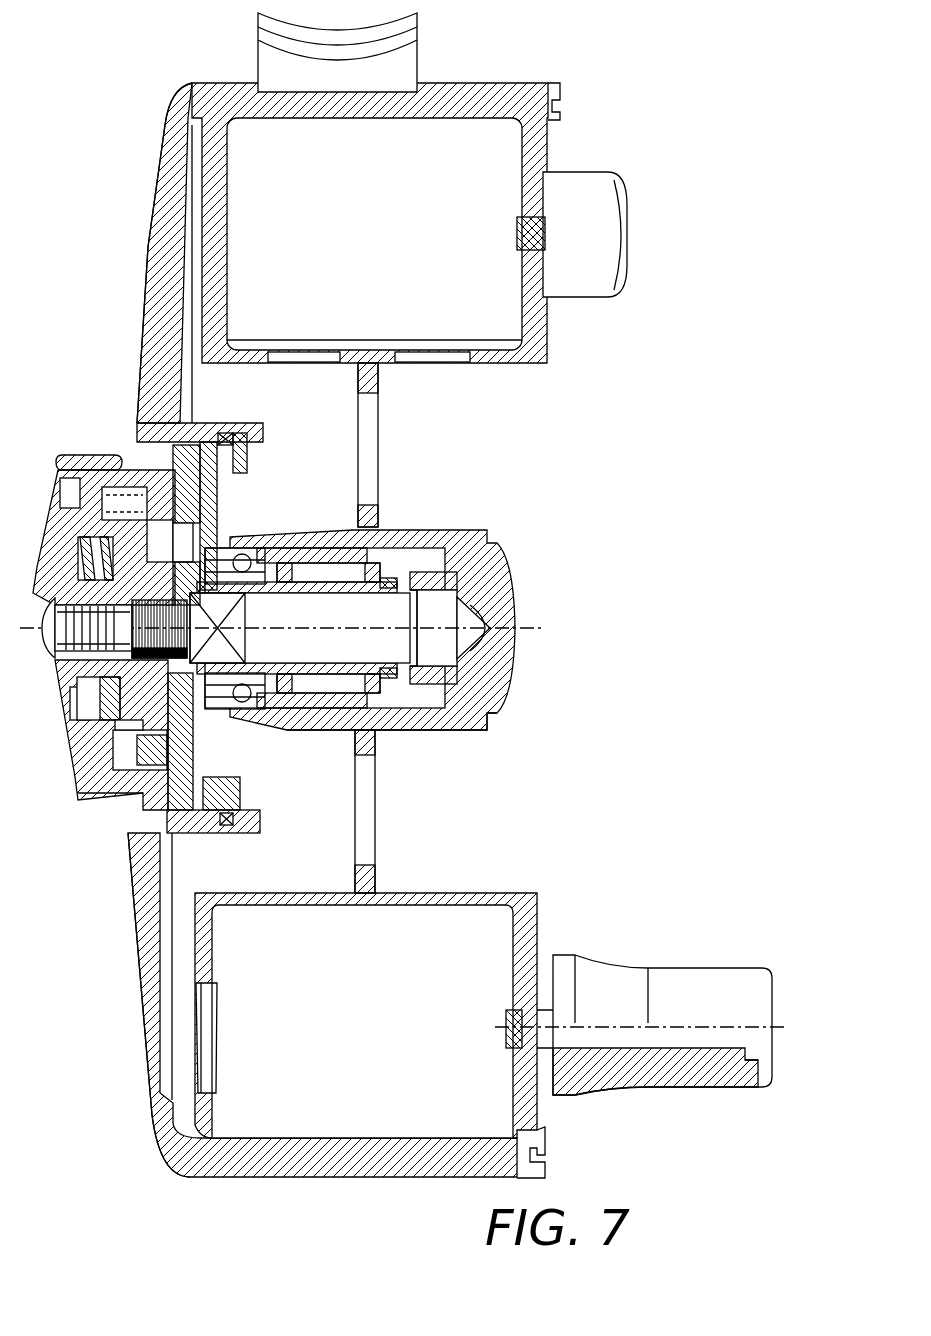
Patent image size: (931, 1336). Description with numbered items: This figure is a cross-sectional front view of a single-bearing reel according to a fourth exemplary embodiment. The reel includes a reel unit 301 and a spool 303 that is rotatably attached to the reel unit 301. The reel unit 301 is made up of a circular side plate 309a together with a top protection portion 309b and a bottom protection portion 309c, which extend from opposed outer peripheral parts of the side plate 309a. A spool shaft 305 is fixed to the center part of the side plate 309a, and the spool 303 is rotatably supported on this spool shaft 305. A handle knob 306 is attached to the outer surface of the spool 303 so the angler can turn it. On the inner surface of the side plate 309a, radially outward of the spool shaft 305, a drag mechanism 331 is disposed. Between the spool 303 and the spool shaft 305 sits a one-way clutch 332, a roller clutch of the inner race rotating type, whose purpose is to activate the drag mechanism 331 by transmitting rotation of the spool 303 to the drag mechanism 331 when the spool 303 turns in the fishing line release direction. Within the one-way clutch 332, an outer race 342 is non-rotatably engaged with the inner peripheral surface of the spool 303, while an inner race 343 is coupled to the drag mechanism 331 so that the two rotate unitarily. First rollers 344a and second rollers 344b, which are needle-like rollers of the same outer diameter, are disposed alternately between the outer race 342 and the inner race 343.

The reel unit 301 is at (141, 172).
The circular side plate 309a is at (160, 280).
The top protection portion 309b is at (445, 90).
The bottom protection portion 309c is at (360, 1150).
The spool 303 is at (372, 360).
The spool shaft 305 is at (385, 610).
The handle knob 306 is at (685, 985).
The drag mechanism 331 is at (140, 425).
The one-way clutch 332 is at (322, 585).
The outer race 342 is at (340, 680).
The inner race 343 is at (345, 580).
The first rollers 344a is at (380, 710).
The second rollers 344b is at (392, 721).